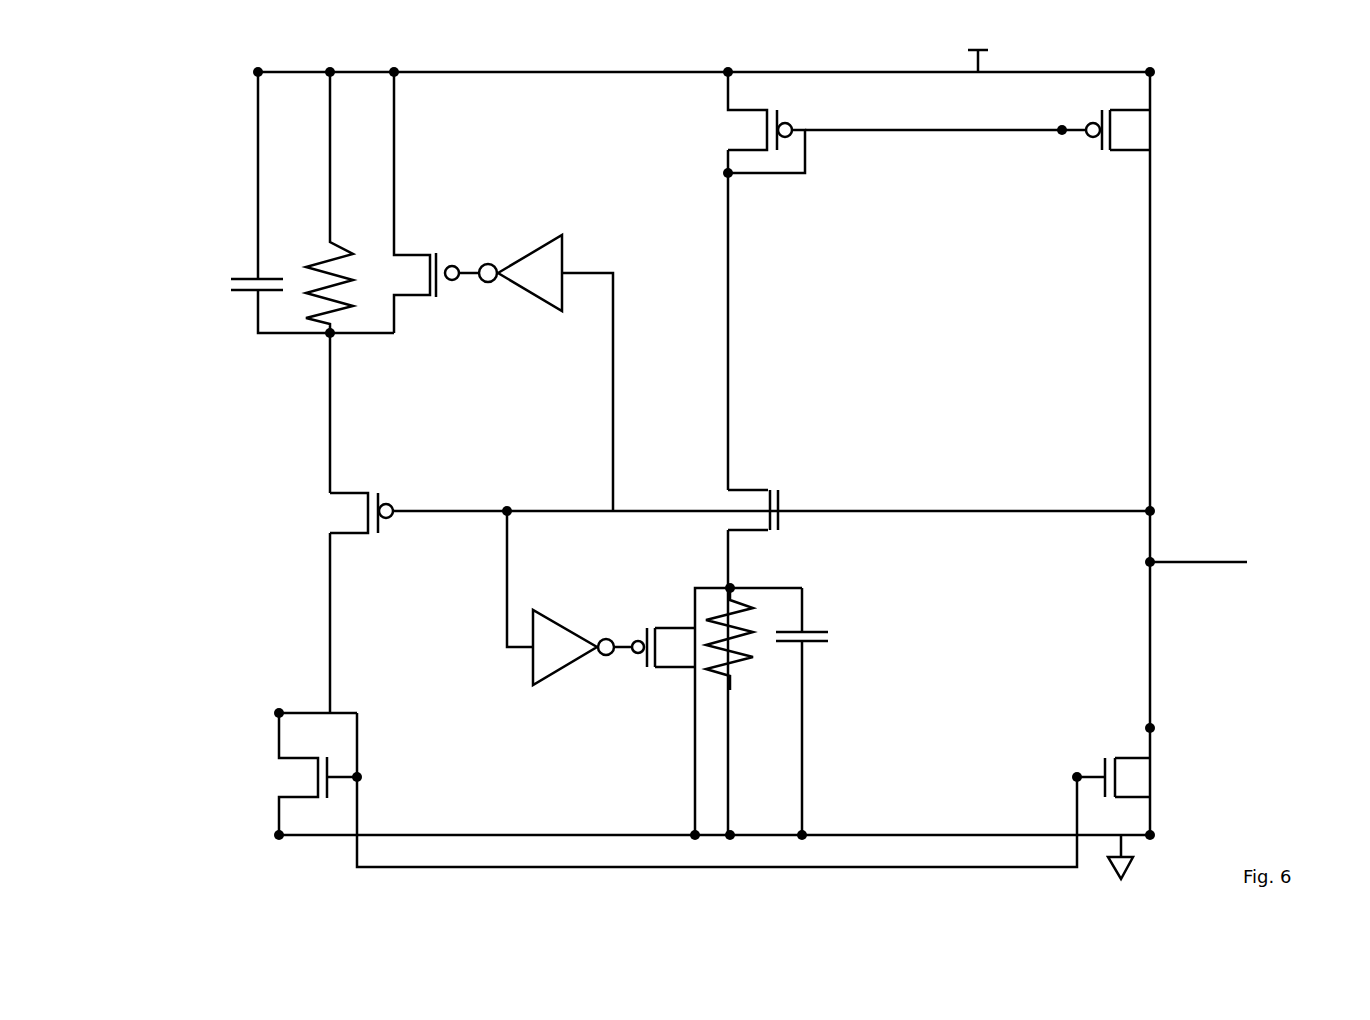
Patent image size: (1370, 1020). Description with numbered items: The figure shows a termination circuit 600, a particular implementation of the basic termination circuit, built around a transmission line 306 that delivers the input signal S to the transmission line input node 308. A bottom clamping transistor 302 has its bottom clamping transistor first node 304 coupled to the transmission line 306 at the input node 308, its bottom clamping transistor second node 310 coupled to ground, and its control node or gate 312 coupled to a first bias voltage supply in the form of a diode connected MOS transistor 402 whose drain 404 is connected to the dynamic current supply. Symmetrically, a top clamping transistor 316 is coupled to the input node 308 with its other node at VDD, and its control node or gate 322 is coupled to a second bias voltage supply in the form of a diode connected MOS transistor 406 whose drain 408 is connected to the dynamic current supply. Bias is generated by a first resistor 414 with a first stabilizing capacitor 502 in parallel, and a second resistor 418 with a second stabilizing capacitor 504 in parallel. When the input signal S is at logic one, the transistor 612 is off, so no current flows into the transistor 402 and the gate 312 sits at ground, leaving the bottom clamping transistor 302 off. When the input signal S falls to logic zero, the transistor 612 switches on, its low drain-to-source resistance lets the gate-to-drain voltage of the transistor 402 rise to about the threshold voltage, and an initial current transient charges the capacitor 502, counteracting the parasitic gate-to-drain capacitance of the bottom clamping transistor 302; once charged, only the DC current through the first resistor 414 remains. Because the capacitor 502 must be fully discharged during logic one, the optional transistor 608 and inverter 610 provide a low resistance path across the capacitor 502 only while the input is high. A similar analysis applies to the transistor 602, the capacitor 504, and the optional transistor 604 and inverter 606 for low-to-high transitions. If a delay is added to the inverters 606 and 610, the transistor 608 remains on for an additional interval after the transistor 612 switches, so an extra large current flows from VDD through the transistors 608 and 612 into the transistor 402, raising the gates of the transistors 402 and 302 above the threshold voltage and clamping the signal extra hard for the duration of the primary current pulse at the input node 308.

The bottom clamping transistor 302 is at (1140, 760).
The bottom clamping transistor first node 304 is at (1155, 725).
The transmission line 306 is at (1190, 565).
The transmission line input node 308 is at (1148, 506).
The bottom clamping transistor second node 310 is at (1155, 833).
The bottom clamping transistor control node 312 is at (1075, 775).
The top clamping transistor 316 is at (1137, 113).
The top clamping transistor control node 322 is at (1060, 133).
The diode connected MOS transistor 402 is at (303, 758).
The drain 404 is at (277, 718).
The diode connected MOS transistor 406 is at (745, 113).
The drain 408 is at (727, 177).
The first resistor 414 is at (333, 257).
The second resistor 418 is at (745, 620).
The first stabilizing capacitor 502 is at (256, 277).
The second stabilizing capacitor 504 is at (808, 631).
The termination circuit 600 is at (1210, 452).
The transistor 602 is at (755, 490).
The transistor 604 is at (677, 627).
The inverter 606 is at (569, 598).
The transistor 608 is at (410, 253).
The inverter 610 is at (520, 273).
The transistor 612 is at (355, 493).